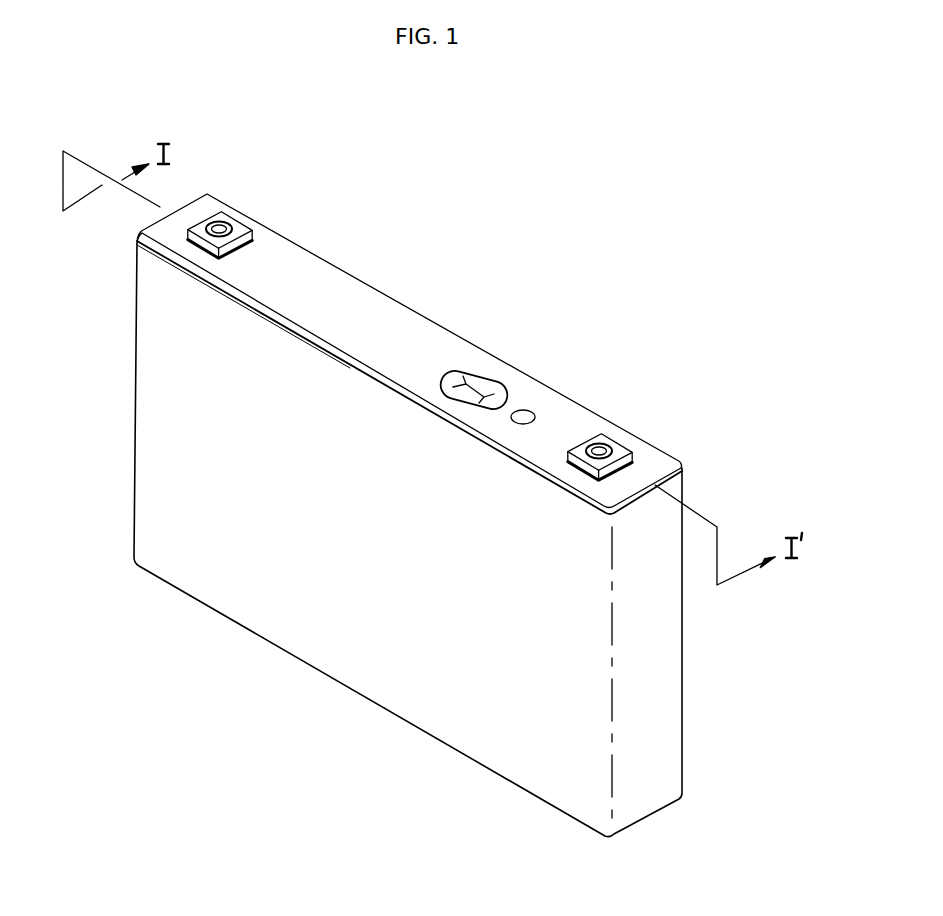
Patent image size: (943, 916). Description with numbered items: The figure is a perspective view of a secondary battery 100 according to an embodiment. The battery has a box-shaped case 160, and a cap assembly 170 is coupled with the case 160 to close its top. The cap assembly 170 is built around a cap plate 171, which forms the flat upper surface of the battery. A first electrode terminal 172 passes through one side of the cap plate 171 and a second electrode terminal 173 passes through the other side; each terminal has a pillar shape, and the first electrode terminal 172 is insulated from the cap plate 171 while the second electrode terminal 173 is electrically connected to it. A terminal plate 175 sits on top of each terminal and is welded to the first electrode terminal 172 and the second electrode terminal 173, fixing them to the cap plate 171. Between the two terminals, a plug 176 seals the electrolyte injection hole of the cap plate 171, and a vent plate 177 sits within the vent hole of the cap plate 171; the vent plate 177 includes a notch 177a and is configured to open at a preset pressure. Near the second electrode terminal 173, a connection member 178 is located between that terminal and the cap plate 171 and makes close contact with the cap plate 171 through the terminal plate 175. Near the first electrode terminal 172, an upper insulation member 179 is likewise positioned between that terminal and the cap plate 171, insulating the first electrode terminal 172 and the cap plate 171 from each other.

The secondary battery 100 is at (455, 176).
The case 160 is at (353, 673).
The cap assembly 170 is at (442, 322).
The cap plate 171 is at (353, 287).
The first electrode terminal 172 is at (220, 222).
The second electrode terminal 173 is at (601, 442).
The terminal plate 175 is at (243, 228).
The plug 176 is at (527, 411).
The vent plate 177 is at (476, 371).
The notch 177a is at (487, 392).
The connection member 178 is at (637, 466).
The upper insulation member 179 is at (253, 236).